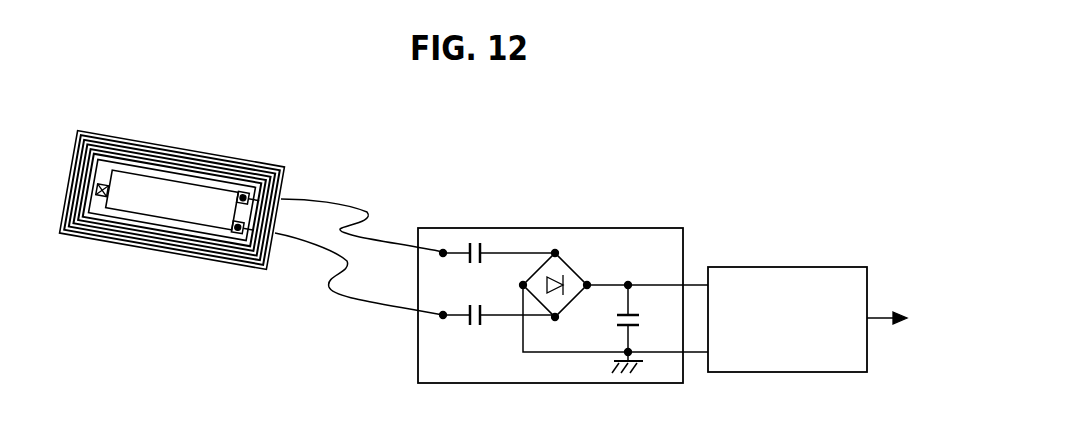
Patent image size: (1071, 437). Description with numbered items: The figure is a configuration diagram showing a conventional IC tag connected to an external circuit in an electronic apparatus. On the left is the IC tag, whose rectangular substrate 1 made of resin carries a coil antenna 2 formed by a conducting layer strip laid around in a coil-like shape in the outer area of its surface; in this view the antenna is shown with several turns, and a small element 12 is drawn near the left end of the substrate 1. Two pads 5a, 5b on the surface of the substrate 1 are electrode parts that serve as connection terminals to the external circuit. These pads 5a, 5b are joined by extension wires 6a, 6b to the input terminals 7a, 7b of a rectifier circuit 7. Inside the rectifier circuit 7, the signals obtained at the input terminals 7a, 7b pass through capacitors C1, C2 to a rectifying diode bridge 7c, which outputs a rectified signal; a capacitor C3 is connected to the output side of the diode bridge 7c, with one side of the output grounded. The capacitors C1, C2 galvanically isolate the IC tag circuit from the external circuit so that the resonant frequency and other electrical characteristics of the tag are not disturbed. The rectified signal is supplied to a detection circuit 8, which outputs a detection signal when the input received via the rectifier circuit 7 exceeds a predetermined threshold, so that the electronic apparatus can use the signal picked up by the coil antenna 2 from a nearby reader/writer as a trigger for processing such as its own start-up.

The substrate 1 is at (163, 255).
The coil antenna 2 is at (157, 146).
The wireless IC chip 12 is at (74, 192).
The pad 5a is at (232, 238).
The pad 5b is at (243, 192).
The extension wire 6a is at (360, 303).
The extension wire 6b is at (387, 242).
The rectifier circuit 7 is at (563, 298).
The input terminal 7a is at (443, 318).
The input terminal 7b is at (443, 251).
The rectifying diode bridge 7c is at (572, 270).
The detection circuit 8 is at (770, 267).
The capacitor C1 is at (477, 266).
The capacitor C2 is at (477, 328).
The capacitor C3 is at (644, 319).